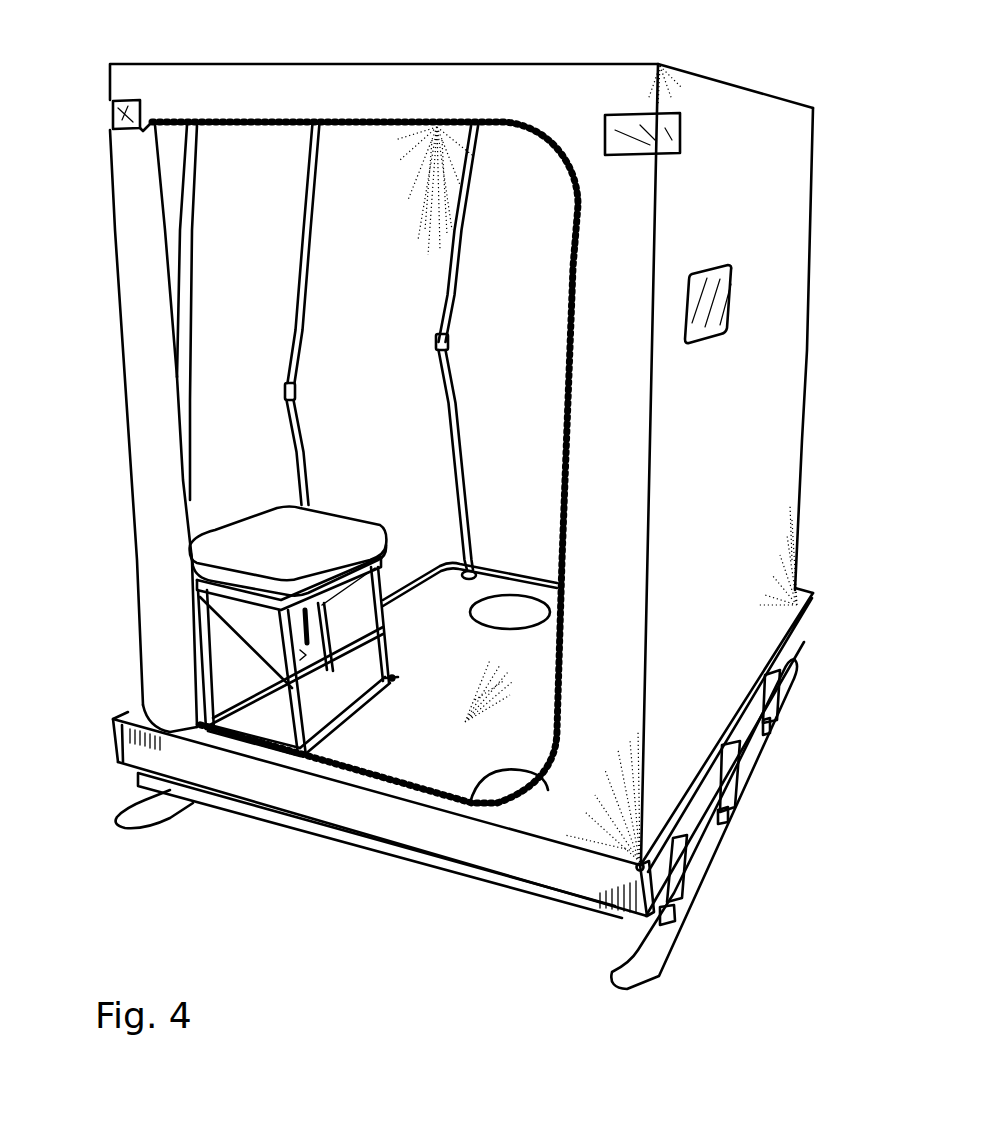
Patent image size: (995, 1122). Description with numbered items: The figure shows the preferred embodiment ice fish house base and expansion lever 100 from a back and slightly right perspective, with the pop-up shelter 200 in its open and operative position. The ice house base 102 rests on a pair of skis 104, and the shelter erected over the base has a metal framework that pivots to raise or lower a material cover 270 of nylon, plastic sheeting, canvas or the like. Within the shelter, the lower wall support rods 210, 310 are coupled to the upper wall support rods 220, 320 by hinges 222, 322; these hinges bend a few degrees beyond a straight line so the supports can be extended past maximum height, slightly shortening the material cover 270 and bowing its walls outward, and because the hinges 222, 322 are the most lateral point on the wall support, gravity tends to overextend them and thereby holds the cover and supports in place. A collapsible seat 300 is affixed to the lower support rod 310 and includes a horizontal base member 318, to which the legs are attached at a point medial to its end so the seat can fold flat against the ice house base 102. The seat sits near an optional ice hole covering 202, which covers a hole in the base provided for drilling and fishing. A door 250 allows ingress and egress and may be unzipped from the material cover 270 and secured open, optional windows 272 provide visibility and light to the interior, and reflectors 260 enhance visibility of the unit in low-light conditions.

The ice fish house base and expansion lever 100 is at (320, 45).
The ice house base 102 is at (352, 818).
The skis 104 is at (699, 870).
The pop-up shelter 200 is at (434, 96).
The ice hole coverings 202 is at (528, 623).
The lower wall support rod 210 is at (450, 408).
The upper wall support rod 220 is at (450, 297).
The hinge 222 is at (449, 342).
The door 250 is at (145, 413).
The reflectors 260 is at (134, 118).
The material cover 270 is at (762, 135).
The windows 272 is at (725, 295).
The collapsible seat 300 is at (358, 506).
The lower wall support rod 310 is at (299, 454).
The horizontal base member 318 is at (378, 692).
The upper wall support rod 320 is at (299, 345).
The hinge 322 is at (295, 392).